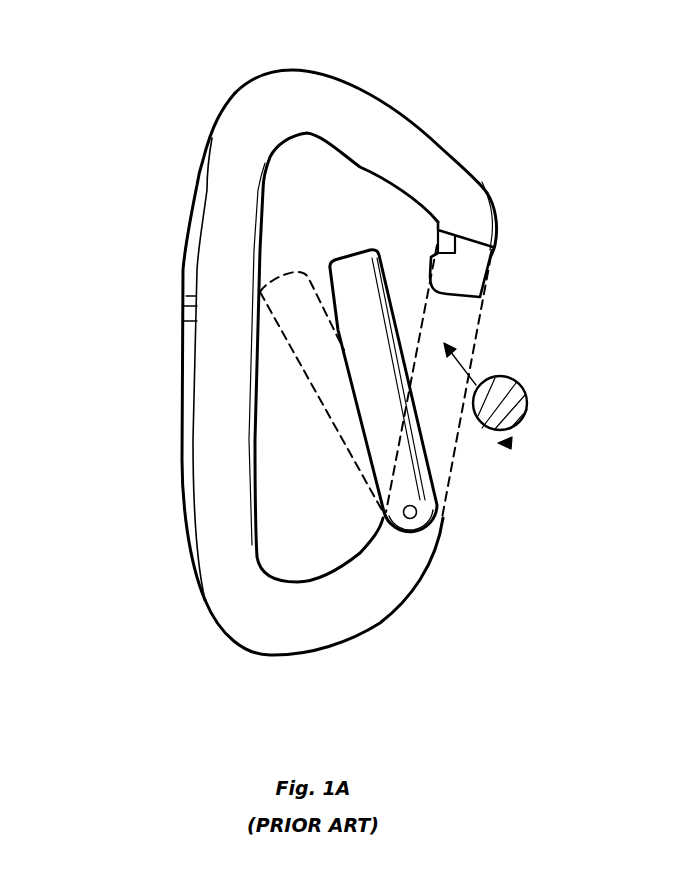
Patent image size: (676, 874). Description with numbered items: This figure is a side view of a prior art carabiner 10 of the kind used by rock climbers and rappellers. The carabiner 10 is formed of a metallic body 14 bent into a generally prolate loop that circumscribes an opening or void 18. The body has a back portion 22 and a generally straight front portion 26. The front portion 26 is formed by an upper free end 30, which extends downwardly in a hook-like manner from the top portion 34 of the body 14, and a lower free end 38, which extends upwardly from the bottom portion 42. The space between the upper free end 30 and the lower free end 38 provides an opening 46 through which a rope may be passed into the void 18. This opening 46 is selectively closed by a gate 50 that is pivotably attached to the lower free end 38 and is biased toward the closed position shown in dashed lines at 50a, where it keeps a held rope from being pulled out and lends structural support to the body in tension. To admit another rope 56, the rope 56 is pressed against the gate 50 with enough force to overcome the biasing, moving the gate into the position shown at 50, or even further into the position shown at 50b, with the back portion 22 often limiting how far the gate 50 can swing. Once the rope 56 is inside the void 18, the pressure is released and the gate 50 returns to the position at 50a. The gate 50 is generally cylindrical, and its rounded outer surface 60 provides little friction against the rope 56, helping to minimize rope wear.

The carabiner 10 is at (121, 263).
The metallic body 14 is at (192, 436).
The opening or void 18 is at (324, 192).
The back portion 22 is at (182, 358).
The front portion 26 is at (508, 443).
The upper free end 30 is at (472, 277).
The top portion 34 is at (318, 100).
The lower free end 38 is at (447, 519).
The bottom portion 42 is at (284, 630).
The opening 46 is at (502, 357).
The gate 50 is at (374, 252).
The gate in closed position 50a is at (484, 322).
The gate in further displaced position 50b is at (320, 357).
The rope 56 is at (515, 403).
The rounded outer surface 60 is at (362, 305).